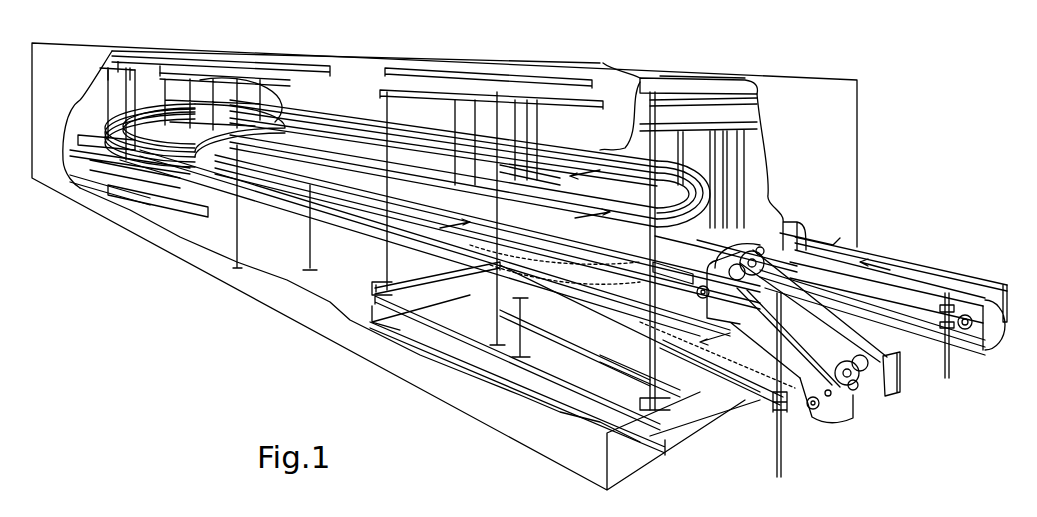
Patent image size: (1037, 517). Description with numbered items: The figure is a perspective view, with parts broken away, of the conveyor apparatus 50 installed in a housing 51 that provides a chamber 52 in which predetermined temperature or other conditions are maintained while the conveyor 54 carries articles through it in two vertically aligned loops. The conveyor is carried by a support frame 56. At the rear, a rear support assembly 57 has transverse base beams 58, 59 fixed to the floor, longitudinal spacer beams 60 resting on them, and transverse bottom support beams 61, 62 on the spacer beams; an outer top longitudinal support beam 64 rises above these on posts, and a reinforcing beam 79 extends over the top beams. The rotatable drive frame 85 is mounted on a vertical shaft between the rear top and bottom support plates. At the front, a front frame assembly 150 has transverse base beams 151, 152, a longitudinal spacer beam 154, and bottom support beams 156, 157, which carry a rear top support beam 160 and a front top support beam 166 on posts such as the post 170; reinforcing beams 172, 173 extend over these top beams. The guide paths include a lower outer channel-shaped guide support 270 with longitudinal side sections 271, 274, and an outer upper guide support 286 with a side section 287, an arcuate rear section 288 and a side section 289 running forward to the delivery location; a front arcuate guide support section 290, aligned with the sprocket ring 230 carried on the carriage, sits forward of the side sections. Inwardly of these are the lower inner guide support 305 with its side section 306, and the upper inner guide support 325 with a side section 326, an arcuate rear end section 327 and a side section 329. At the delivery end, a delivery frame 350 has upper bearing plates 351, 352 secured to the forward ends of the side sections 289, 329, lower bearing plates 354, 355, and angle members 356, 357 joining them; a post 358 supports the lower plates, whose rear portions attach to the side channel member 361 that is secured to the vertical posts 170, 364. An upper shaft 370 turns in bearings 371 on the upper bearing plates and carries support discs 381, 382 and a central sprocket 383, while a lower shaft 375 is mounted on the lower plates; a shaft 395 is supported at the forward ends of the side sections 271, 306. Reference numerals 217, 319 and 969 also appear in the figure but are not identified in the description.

The conveyor apparatus 50 is at (284, 200).
The housing 51 is at (822, 78).
The chamber 52 is at (160, 232).
The conveyor 54 is at (931, 282).
The support frame 56 is at (225, 223).
The rear support assembly 57 is at (184, 207).
The base beam 58 is at (70, 192).
The base beam 59 is at (158, 206).
The spacer beam 60 is at (100, 198).
The bottom support beam 61 is at (98, 130).
The bottom support beam 62 is at (158, 172).
The outer top longitudinally extending support beam 64 is at (105, 64).
The longitudinal reinforcing beam 79 is at (140, 60).
The rotatable drive frame 85 is at (285, 70).
The front frame assembly 150 is at (372, 289).
The base beam 151 is at (388, 340).
The base beam 152 is at (556, 398).
The spacer beam 154 is at (382, 308).
The rear bottom support beam 156 is at (430, 275).
The front bottom support beam 157 is at (672, 402).
The rear top support beam 160 is at (388, 96).
The front top support beam 166 is at (745, 113).
The post 170 is at (620, 370).
The reinforcing beam 172 is at (440, 72).
The reinforcing beam 173 is at (718, 78).
The mounting plate 217 is at (712, 255).
The sprocket ring 230 is at (562, 178).
The lower outer channel-shaped guide support 270 is at (1018, 311).
The side section 271 is at (900, 262).
The side section 274 is at (355, 205).
The outer upper guide support 286 is at (335, 112).
The side section 287 is at (556, 162).
The arcuate rear section 288 is at (165, 112).
The side section 289 is at (328, 175).
The front arcuate guide support section 290 is at (701, 197).
The lower inner guide support 305 is at (915, 315).
The side section 306 is at (352, 142).
The end turnaround 319 is at (676, 198).
The upper inner guide support 325 is at (352, 128).
The side section 326 is at (440, 146).
The arcuate rear end section 327 is at (150, 102).
The side section 329 is at (450, 166).
The delivery frame 350 is at (802, 444).
The upper bearing plate 351 is at (708, 302).
The upper bearing plate 352 is at (725, 245).
The lower bearing plate 354 is at (772, 410).
The lower bearing plate 355 is at (902, 380).
The angle member 356 is at (787, 346).
The angle member 357 is at (838, 322).
The post 358 is at (774, 457).
The outer side channel member 361 is at (580, 332).
The vertical post 364 is at (522, 334).
The upper shaft 370 is at (706, 300).
The bearings 371 is at (708, 297).
The lower shaft 375 is at (838, 428).
The support disc 381 is at (830, 288).
The support disc 382 is at (758, 278).
The central sprocket 383 is at (762, 264).
The shaft 395 is at (960, 328).
The loop track 969 is at (250, 147).